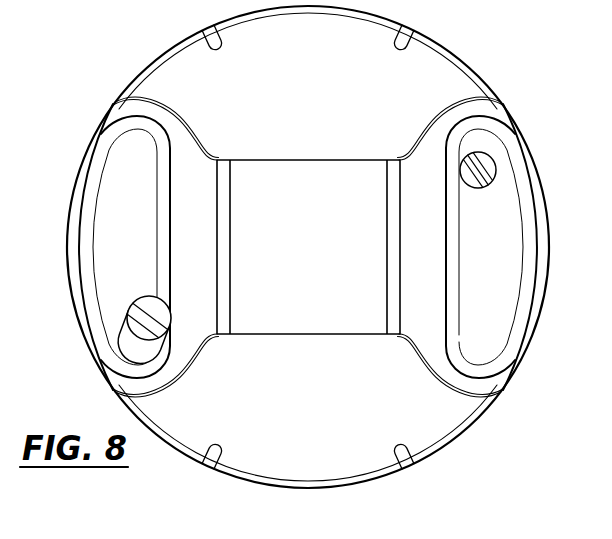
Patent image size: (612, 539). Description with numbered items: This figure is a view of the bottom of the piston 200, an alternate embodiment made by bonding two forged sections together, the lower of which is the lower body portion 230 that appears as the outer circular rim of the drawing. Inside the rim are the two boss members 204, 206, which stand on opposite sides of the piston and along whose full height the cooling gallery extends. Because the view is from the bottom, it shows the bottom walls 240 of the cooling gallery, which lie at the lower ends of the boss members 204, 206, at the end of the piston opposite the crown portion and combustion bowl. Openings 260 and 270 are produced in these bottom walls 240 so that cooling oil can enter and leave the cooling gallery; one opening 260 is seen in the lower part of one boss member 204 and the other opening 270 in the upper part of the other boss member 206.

The piston 200 is at (94, 392).
The boss member 204 is at (98, 132).
The boss member 206 is at (528, 152).
The lower body portion 230 is at (457, 55).
The bottom walls of the cooling gallery 240 is at (138, 155).
The opening 260 is at (152, 305).
The opening 270 is at (478, 179).